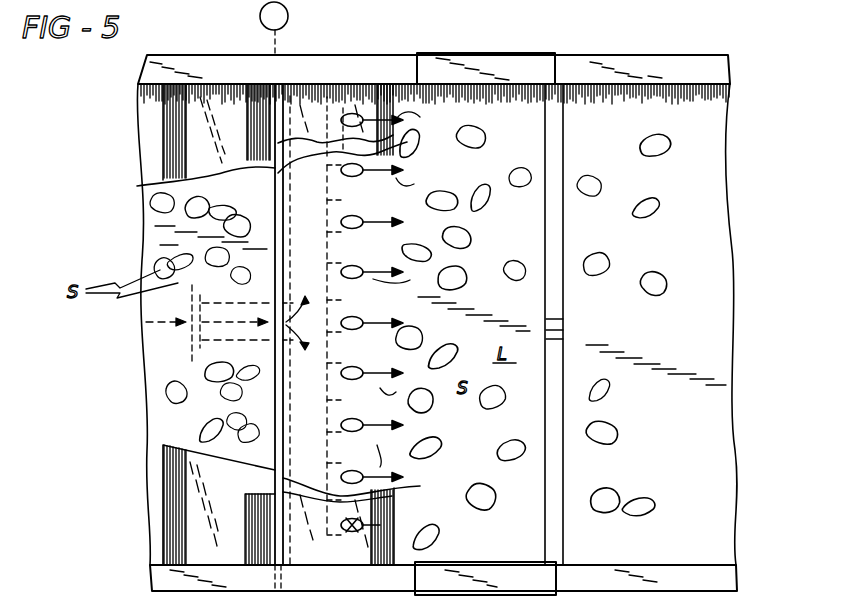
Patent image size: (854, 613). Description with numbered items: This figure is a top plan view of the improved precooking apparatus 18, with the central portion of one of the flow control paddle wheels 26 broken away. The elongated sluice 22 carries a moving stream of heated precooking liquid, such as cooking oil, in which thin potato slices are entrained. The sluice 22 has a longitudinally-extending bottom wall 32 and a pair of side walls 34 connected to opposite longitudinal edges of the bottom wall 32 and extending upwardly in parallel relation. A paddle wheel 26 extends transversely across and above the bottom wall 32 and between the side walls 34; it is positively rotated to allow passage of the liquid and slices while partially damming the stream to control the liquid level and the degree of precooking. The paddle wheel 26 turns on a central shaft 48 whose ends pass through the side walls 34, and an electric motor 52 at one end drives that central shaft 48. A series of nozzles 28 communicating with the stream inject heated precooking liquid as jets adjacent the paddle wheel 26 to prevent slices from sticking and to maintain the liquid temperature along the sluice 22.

The precooking apparatus 18 is at (720, 48).
The elongated sluice 22 is at (600, 56).
The paddle wheels 26 is at (337, 83).
The nozzles 28 is at (348, 171).
The bottom wall 32 is at (716, 462).
The side walls 34 is at (655, 60).
The central shaft 48 is at (290, 84).
The electric motor 52 is at (258, 15).